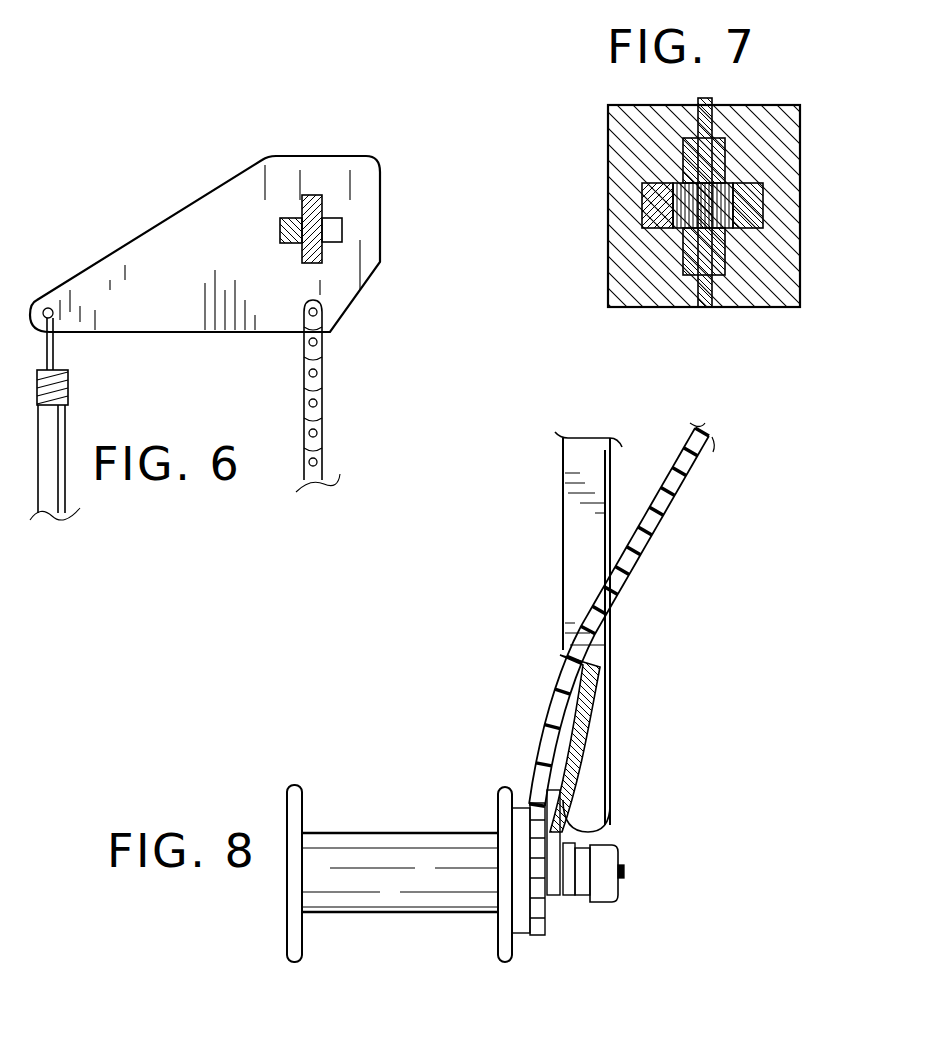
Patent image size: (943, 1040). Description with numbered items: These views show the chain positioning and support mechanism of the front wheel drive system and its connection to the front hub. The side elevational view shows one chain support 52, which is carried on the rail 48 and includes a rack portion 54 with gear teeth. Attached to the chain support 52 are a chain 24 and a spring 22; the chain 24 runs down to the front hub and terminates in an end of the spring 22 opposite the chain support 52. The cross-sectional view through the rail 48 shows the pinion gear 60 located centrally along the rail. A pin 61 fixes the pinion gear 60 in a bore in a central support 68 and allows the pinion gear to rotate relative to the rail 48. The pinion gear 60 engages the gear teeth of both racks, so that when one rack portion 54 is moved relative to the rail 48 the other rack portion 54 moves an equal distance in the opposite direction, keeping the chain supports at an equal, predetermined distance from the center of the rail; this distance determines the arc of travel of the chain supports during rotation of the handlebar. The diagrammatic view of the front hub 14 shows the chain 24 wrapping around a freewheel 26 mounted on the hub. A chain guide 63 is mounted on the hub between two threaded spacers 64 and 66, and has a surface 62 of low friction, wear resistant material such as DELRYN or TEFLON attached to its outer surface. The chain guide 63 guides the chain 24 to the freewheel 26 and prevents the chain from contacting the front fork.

In FIG. 8, the front hub 14 is at (383, 838).
In FIG. 6, the spring 22 is at (63, 423).
In FIG. 6, the chain 24 is at (322, 413).
In FIG. 8, the chain 24 is at (621, 614).
In FIG. 8, the freewheel 26 is at (540, 925).
In FIG. 6, the rail 48 is at (322, 212).
In FIG. 7, the rail 48 is at (725, 163).
In FIG. 6, the chain support 52 is at (148, 235).
In FIG. 6, the rack portion 54 is at (280, 230).
In FIG. 7, the rack portion 54 is at (642, 210).
In FIG. 7, the pinion gear 60 is at (730, 228).
In FIG. 7, the pin 61 is at (712, 100).
In FIG. 8, the surface 62 is at (595, 690).
In FIG. 8, the chain guide 63 is at (565, 836).
In FIG. 8, the threaded spacer 64 is at (568, 895).
In FIG. 8, the threaded spacer 66 is at (556, 896).
In FIG. 7, the central support 68 is at (608, 265).